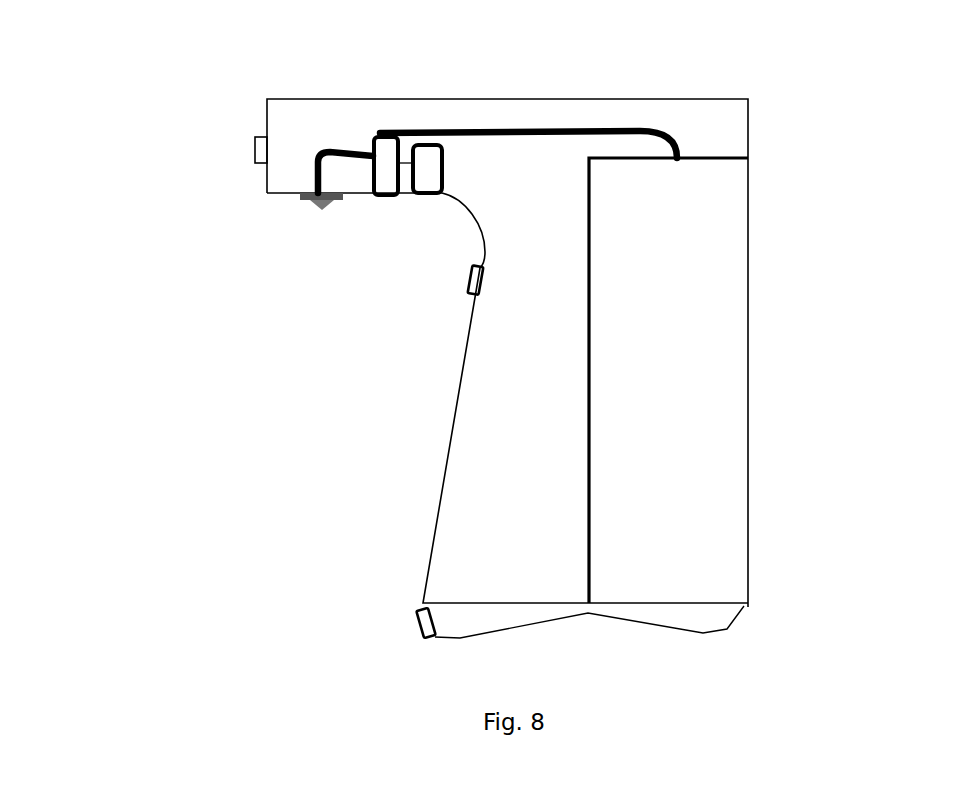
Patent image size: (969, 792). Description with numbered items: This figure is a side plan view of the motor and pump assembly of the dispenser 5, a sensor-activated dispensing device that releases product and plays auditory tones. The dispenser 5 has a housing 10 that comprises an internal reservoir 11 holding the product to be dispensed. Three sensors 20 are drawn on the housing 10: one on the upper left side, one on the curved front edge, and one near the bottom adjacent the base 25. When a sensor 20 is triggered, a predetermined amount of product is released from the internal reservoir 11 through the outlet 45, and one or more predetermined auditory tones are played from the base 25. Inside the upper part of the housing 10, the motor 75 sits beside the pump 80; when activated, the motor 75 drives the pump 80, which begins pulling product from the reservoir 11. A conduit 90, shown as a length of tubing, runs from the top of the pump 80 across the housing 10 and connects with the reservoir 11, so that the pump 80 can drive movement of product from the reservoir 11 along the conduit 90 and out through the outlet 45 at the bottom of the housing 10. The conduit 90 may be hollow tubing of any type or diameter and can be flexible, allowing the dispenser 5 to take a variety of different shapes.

The dispenser 5 is at (150, 113).
The housing 10 is at (507, 112).
The internal reservoir 11 is at (702, 300).
The sensor 20 is at (255, 153).
The base 25 is at (730, 622).
The outlet 45 is at (317, 210).
The motor 75 is at (427, 186).
The pump 80 is at (387, 180).
The conduit 90 is at (598, 128).